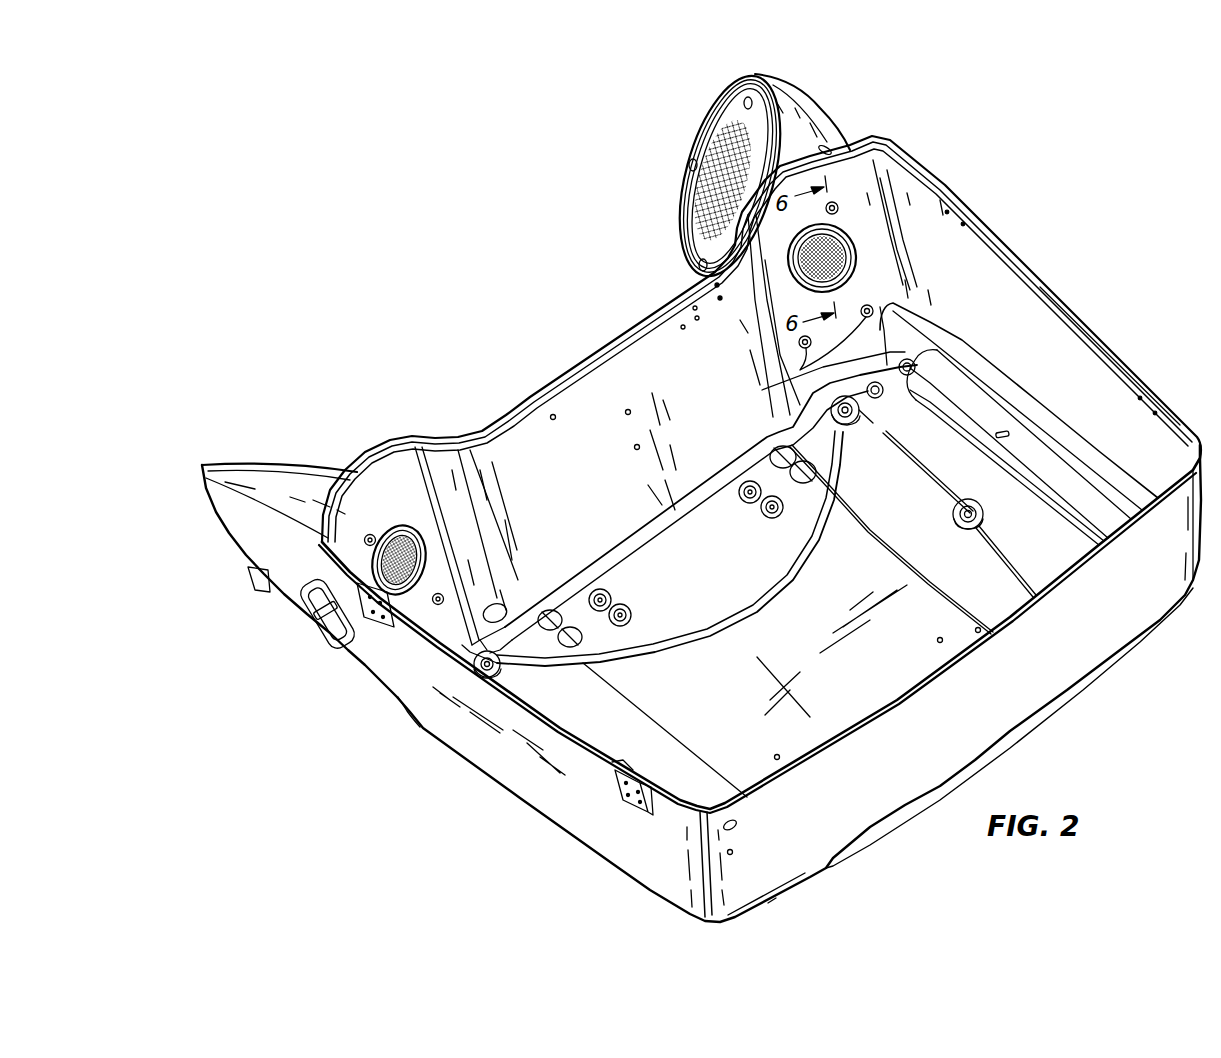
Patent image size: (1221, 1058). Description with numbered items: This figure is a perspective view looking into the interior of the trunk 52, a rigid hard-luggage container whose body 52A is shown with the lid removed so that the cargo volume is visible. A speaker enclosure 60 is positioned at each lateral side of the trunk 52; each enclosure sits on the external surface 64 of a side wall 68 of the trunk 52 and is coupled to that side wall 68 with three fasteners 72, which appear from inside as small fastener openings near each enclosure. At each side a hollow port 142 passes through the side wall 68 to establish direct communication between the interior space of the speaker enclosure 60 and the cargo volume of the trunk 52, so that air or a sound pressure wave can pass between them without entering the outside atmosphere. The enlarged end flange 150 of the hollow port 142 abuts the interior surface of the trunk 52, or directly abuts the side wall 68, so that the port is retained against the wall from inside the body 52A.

The trunk 52 is at (1090, 210).
The body 52A is at (1120, 343).
The speaker enclosure 60 is at (818, 138).
The external surface 64 is at (552, 385).
The side wall 68 is at (592, 482).
The fasteners 72 is at (836, 203).
The hollow port 142 is at (870, 250).
The end flange 150 is at (802, 290).